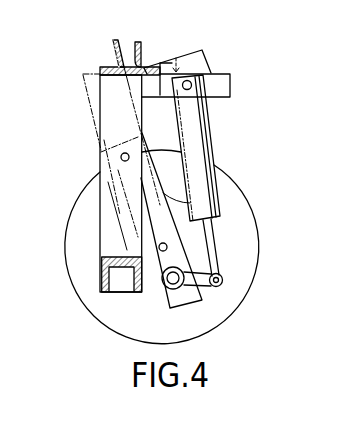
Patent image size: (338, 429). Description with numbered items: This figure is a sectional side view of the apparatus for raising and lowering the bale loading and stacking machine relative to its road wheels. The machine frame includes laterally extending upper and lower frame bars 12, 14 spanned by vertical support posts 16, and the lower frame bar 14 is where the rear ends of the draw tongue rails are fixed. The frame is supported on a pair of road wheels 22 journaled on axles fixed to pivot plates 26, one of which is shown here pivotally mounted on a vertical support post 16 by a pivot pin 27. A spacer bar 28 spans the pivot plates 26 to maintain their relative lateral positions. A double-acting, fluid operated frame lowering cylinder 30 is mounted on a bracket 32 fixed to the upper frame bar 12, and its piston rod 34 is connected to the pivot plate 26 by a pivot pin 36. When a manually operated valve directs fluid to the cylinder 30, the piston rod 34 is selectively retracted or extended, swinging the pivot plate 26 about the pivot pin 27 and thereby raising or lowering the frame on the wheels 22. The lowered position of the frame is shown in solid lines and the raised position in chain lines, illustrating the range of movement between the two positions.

The upper frame bar 12 is at (140, 54).
The lower frame bar 14 is at (128, 284).
The vertical support post 16 is at (100, 212).
The road wheel 22 is at (247, 235).
The pivot plate 26 is at (185, 255).
The pivot pin 27 is at (121, 158).
The spacer bar 28 is at (176, 296).
The frame lowering cylinder 30 is at (204, 160).
The bracket 32 is at (230, 85).
The piston rod 34 is at (213, 230).
The pivot pin 36 is at (222, 282).